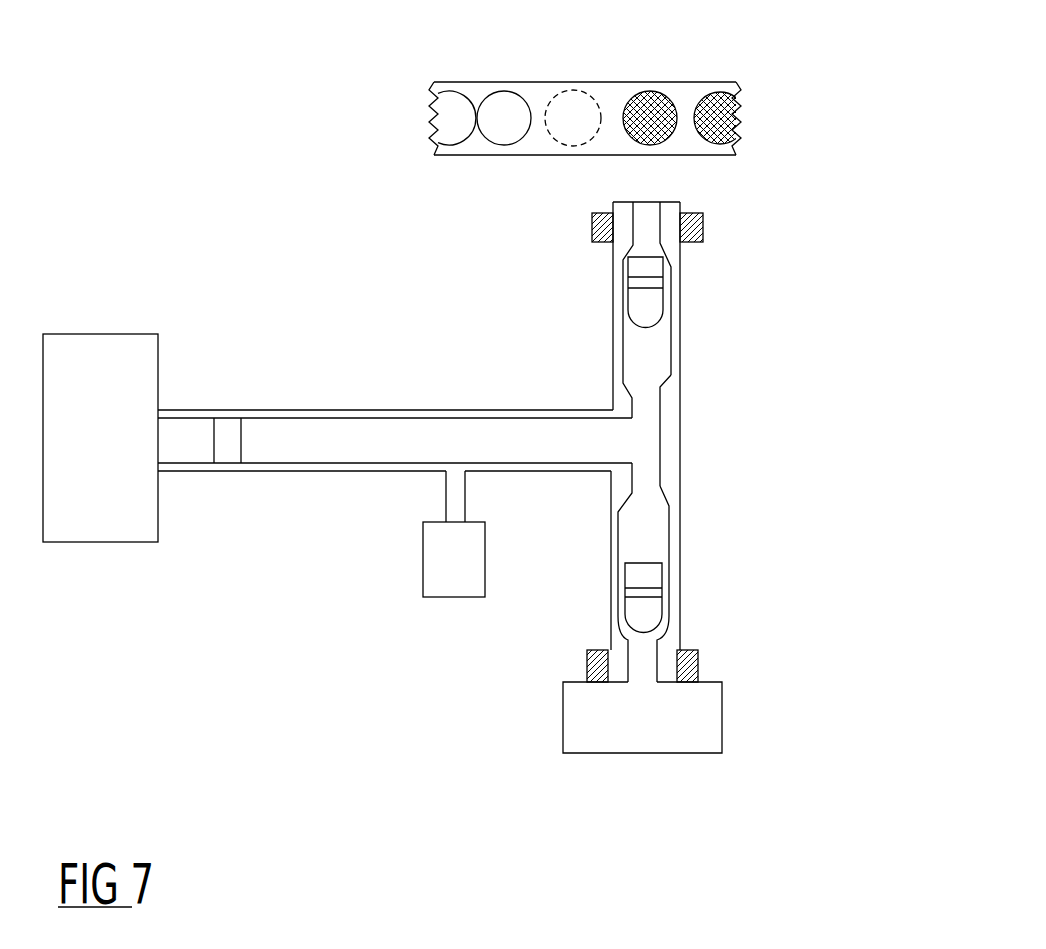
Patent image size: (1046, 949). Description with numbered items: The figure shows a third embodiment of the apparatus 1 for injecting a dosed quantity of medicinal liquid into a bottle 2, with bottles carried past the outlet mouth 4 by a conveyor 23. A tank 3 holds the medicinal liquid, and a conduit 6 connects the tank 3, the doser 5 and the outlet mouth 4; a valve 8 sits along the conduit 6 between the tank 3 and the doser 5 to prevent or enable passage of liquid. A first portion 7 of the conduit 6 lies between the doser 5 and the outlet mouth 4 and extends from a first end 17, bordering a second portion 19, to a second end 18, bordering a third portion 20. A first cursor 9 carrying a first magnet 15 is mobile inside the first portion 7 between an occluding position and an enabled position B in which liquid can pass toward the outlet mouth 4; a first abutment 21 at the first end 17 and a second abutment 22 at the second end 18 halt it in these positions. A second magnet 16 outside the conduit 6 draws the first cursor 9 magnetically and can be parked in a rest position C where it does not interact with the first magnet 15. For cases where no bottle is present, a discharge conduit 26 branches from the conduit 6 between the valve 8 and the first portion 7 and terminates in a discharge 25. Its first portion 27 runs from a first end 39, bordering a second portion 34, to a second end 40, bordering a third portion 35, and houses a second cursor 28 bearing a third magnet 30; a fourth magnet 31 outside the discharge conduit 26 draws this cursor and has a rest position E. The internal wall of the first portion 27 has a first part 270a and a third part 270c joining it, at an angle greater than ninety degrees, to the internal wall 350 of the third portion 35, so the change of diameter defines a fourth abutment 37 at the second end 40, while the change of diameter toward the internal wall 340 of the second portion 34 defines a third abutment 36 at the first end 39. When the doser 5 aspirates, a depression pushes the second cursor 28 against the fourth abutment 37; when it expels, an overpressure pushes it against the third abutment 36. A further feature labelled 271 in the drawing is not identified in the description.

The apparatus 1 is at (203, 683).
The bottle 2 is at (444, 110).
The conveyor 23 is at (545, 93).
The tank 3 is at (88, 448).
The outlet mouth 4 is at (611, 202).
The doser 5 is at (443, 576).
The conduit 6 is at (323, 400).
The first portion of conduit 7 is at (611, 320).
The valve 8 is at (218, 456).
The first cursor 9 is at (640, 317).
The first magnet 15 is at (660, 285).
The second magnet 16 is at (592, 220).
The first end 17 is at (683, 374).
The second end 18 is at (685, 252).
The second portion of conduit 19 is at (683, 400).
The third portion of conduit 20 is at (706, 210).
The first abutment 21 is at (621, 383).
The second abutment 22 is at (626, 251).
The discharge 25 is at (620, 736).
The discharge conduit 26 is at (605, 561).
The first portion of discharge conduit 27 is at (683, 560).
The second cursor 28 is at (642, 620).
The third magnet 30 is at (633, 590).
The fourth magnet 31 is at (585, 668).
The second portion of discharge conduit 34 is at (683, 644).
The third portion of discharge conduit 35 is at (683, 480).
The third abutment 36 is at (617, 626).
The fourth abutment 37 is at (620, 500).
The first end 39 is at (606, 612).
The second end 40 is at (683, 508).
The first part 270a is at (683, 590).
The third part 270c is at (666, 498).
The housing lower opening 271 is at (679, 630).
The internal wall 340 is at (658, 658).
The internal wall 350 is at (777, 430).
The enabled position B is at (611, 295).
The rest position C is at (590, 226).
The rest position E is at (563, 684).